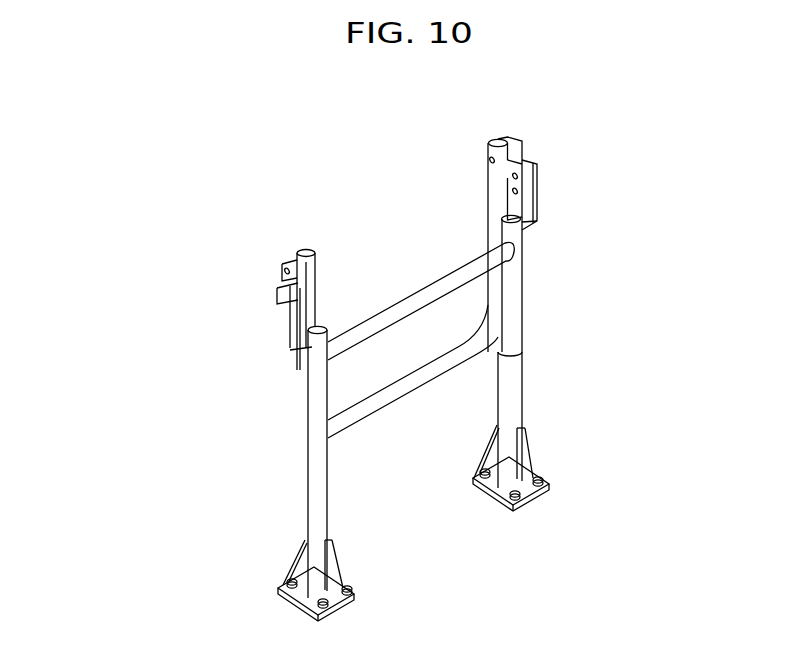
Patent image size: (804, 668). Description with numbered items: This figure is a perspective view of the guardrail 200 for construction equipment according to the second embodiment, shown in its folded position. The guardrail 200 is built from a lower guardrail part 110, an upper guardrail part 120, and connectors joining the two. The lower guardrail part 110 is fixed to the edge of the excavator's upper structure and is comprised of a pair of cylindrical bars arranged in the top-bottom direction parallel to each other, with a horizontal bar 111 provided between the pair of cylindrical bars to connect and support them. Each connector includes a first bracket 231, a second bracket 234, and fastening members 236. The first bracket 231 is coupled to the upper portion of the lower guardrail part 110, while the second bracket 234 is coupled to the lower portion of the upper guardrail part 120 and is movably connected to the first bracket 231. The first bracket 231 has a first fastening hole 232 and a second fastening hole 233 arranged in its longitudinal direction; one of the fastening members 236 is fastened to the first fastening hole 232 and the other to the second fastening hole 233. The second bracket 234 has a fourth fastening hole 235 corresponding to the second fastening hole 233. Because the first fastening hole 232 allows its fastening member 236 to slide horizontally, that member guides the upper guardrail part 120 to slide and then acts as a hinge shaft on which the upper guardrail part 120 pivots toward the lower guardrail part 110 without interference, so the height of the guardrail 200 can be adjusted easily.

The guardrail for construction equipment 200 is at (258, 134).
The lower guardrail part 110 is at (522, 385).
The horizontal bar 111 is at (408, 298).
The upper guardrail part 120 is at (415, 387).
The first bracket 231 is at (537, 221).
The first fastening hole 232 is at (538, 167).
The second fastening hole 233 is at (540, 190).
The second bracket 234 is at (513, 136).
The fourth fastening hole 235 is at (283, 272).
The fastening members 236 is at (283, 295).